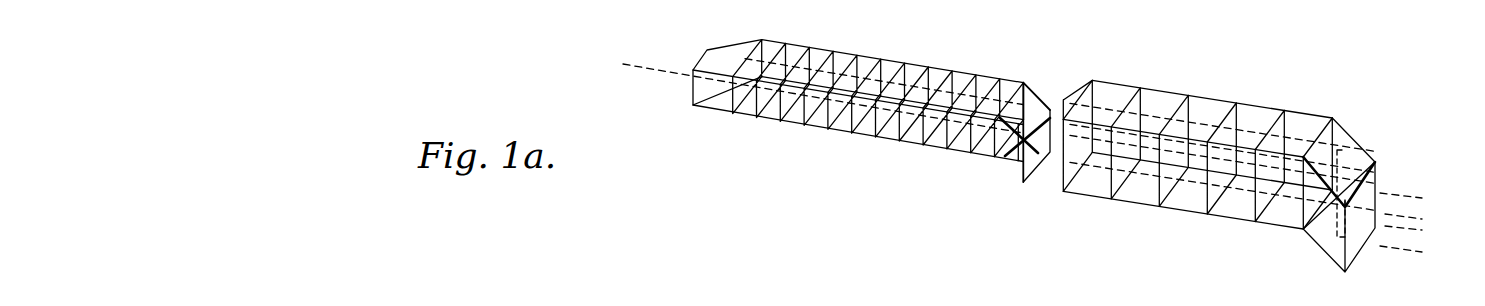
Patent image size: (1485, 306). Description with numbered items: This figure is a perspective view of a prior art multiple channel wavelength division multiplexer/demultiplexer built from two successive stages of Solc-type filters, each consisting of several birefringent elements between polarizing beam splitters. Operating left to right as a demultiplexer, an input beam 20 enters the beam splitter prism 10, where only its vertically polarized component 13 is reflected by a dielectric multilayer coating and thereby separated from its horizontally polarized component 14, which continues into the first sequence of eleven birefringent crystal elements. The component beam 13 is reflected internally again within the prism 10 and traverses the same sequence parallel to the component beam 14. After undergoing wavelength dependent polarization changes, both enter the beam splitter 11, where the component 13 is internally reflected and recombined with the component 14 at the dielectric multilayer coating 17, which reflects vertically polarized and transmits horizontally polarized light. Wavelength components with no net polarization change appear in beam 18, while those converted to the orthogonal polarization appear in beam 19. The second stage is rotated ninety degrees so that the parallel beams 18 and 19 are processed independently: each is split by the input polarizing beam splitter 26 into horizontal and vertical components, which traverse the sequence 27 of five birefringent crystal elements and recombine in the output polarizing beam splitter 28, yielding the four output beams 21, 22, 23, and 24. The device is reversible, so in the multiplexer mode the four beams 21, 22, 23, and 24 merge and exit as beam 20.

The beam splitter prism 10 is at (729, 44).
The beam splitter 11 is at (1030, 93).
The vertically polarized component 13 is at (898, 83).
The horizontally polarized component 14 is at (893, 141).
The dielectric multilayer coating 17 is at (1072, 92).
The beam 18 is at (995, 142).
The beam 19 is at (1011, 153).
The input beam 20 is at (651, 67).
The output beam 21 is at (1408, 197).
The output beam 22 is at (1408, 231).
The output beam 23 is at (1408, 218).
The output beam 24 is at (1410, 254).
The input polarizing beam splitter 26 is at (1038, 182).
The sequence of five birefringent crystal elements 27 is at (1211, 100).
The output polarizing beam splitter 28 is at (1350, 140).